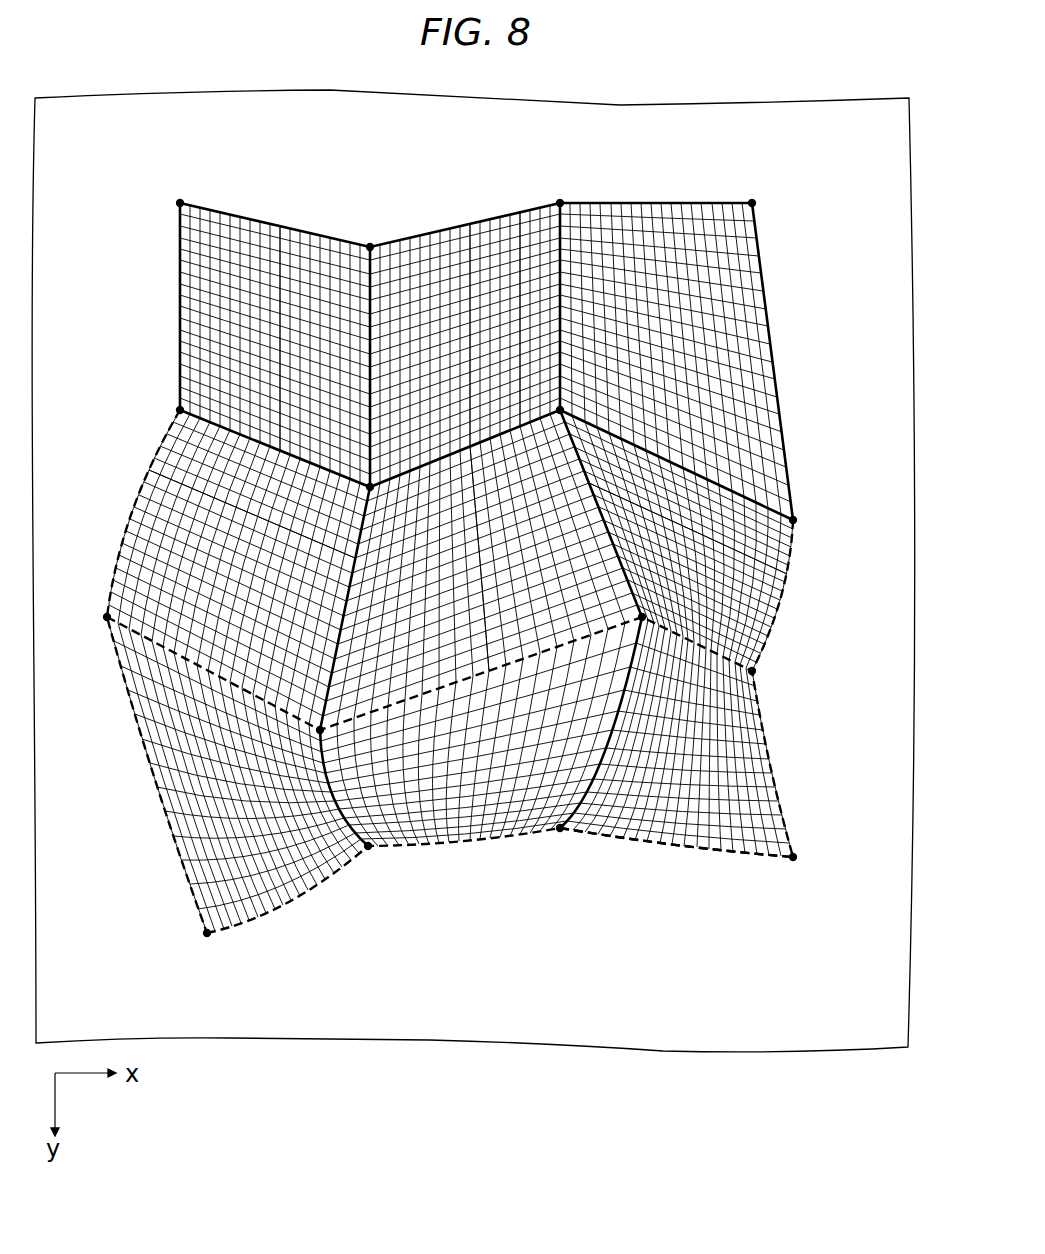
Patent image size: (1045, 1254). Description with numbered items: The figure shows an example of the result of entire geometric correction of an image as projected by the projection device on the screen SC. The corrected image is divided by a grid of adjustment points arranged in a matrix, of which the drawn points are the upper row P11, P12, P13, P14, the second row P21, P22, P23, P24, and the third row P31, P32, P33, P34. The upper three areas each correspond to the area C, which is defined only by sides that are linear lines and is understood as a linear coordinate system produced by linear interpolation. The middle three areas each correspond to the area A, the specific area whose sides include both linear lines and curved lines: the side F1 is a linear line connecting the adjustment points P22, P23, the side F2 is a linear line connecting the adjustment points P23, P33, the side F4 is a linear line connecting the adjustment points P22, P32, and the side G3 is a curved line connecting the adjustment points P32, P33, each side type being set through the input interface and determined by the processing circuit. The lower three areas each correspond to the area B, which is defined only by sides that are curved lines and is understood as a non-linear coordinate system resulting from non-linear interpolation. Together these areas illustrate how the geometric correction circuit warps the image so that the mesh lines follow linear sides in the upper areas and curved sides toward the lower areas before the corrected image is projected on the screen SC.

The screen SC is at (783, 120).
The adjustment point P11 is at (180, 203).
The adjustment point P12 is at (370, 247).
The adjustment point P13 is at (560, 203).
The adjustment point P14 is at (752, 203).
The adjustment point P21 is at (180, 410).
The adjustment point P22 is at (370, 487).
The adjustment point P23 is at (565, 410).
The adjustment point P24 is at (793, 520).
The adjustment point P31 is at (107, 617).
The adjustment point P32 is at (320, 730).
The adjustment point P33 is at (642, 617).
The adjustment point P34 is at (752, 671).
The area C is at (285, 245).
The side F1 is at (475, 440).
The area A is at (510, 445).
The side F4 is at (345, 540).
The side F2 is at (620, 557).
The side G3 is at (487, 680).
The area B is at (668, 830).